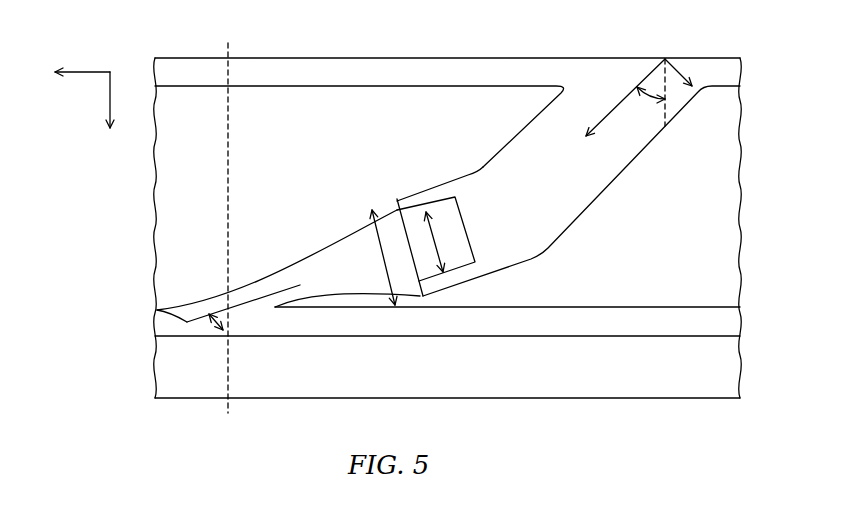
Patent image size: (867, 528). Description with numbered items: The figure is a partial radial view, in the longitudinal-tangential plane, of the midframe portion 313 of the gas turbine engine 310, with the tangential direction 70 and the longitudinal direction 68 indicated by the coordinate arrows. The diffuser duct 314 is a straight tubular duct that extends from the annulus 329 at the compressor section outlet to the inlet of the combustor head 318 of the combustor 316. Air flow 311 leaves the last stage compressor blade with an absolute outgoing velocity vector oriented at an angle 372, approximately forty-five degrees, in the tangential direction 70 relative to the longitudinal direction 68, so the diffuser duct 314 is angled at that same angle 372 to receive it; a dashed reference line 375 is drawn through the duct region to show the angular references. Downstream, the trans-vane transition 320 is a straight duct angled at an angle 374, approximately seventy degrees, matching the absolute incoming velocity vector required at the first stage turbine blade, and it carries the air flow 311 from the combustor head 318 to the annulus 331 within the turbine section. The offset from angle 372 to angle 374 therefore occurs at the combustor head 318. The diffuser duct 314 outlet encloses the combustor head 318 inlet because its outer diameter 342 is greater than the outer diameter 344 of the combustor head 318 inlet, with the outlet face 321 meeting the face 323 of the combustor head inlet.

The gas turbine engine 310 is at (414, 44).
The midframe portion 313 is at (331, 50).
The diffuser duct 314 is at (515, 138).
The combustor 316 is at (411, 188).
The annulus 329 is at (731, 76).
The air flow 311 is at (621, 106).
The angle 372 is at (650, 95).
The vertical reference line 375 is at (226, 147).
The combustor head 318 is at (404, 207).
The face of the combustor head inlet 323 is at (456, 197).
The outer diameter of the combustor head inlet 344 is at (437, 240).
The outer diameter of the diffuser duct outlet 342 is at (383, 258).
The trans-vane transition 320 is at (300, 263).
The face of the diffuser duct outlet 321 is at (414, 273).
The annulus within the turbine section 331 is at (165, 311).
The angle 374 is at (213, 322).
The tangential direction 70 is at (88, 70).
The longitudinal direction 68 is at (108, 90).